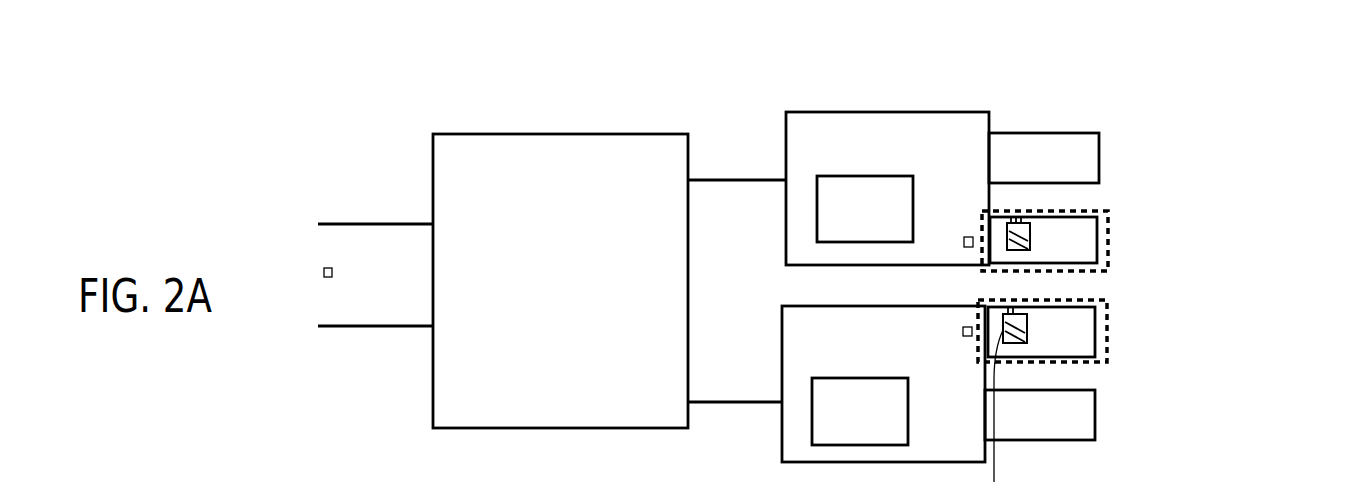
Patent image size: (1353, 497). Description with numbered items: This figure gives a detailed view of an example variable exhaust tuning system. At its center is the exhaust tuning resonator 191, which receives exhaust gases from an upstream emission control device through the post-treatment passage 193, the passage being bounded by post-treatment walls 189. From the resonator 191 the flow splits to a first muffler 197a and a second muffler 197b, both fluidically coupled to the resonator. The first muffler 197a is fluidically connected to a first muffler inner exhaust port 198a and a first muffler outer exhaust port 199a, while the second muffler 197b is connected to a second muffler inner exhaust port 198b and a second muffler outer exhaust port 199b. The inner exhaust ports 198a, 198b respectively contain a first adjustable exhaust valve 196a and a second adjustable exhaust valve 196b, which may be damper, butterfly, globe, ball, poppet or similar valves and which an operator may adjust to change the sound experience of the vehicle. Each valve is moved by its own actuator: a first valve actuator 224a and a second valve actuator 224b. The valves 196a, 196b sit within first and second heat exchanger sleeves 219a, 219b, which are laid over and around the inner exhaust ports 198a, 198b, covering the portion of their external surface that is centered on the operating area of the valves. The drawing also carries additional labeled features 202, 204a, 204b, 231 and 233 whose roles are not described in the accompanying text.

The exhaust tuning resonator 191 is at (574, 288).
The post-treatment passage 193 is at (383, 284).
The post-treatment walls 189 is at (353, 328).
The connection node 202 is at (323, 273).
The first muffler 197a is at (803, 111).
The second muffler 197b is at (848, 462).
The first connection point 204a is at (963, 243).
The second connection point 204b is at (973, 337).
The first valve actuator 224a is at (1012, 218).
The second valve actuator 224b is at (1010, 306).
The first adjustable exhaust valve 196a is at (1020, 218).
The second adjustable exhaust valve 196b is at (1015, 343).
The first muffler outer exhaust port 199a is at (1100, 133).
The second muffler outer exhaust port 199b is at (1097, 432).
The first heat exchanger sleeve 219a is at (1107, 210).
The second heat exchanger sleeve 219b is at (1103, 300).
The first muffler inner exhaust port 198a is at (1100, 247).
The second muffler inner exhaust port 198b is at (1095, 319).
The lead 231 is at (418, 496).
The lead 233 is at (446, 496).